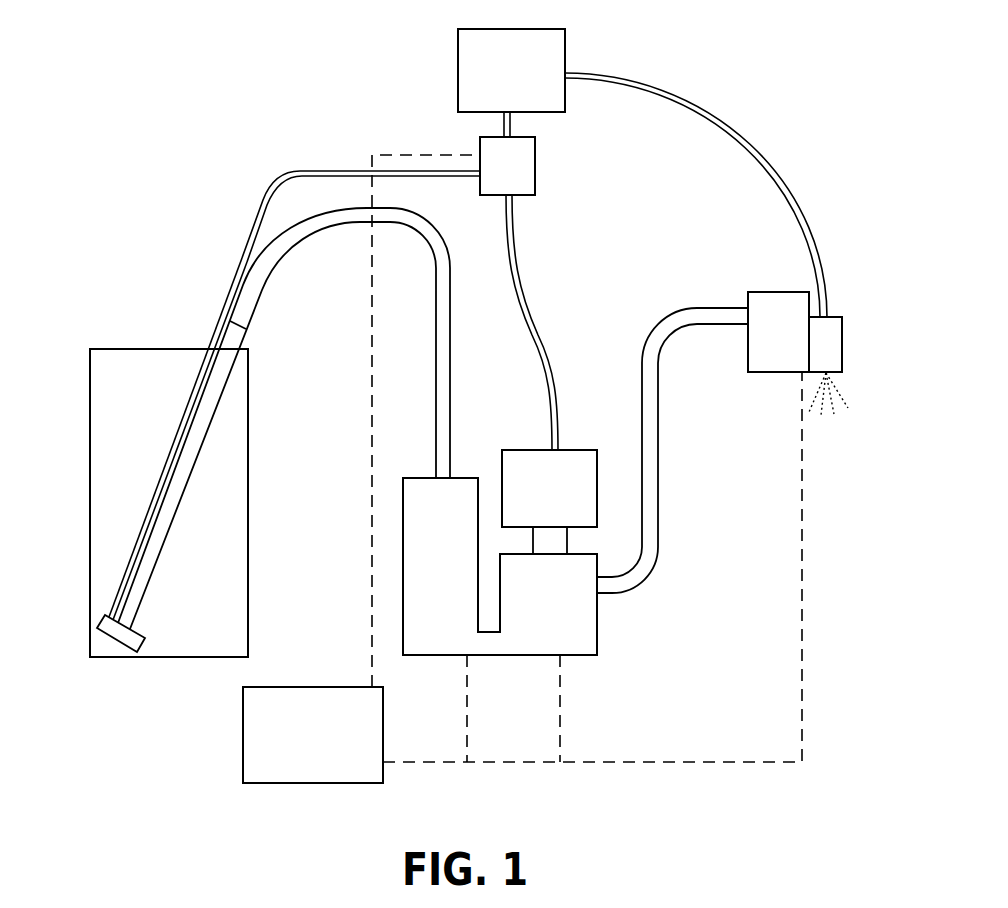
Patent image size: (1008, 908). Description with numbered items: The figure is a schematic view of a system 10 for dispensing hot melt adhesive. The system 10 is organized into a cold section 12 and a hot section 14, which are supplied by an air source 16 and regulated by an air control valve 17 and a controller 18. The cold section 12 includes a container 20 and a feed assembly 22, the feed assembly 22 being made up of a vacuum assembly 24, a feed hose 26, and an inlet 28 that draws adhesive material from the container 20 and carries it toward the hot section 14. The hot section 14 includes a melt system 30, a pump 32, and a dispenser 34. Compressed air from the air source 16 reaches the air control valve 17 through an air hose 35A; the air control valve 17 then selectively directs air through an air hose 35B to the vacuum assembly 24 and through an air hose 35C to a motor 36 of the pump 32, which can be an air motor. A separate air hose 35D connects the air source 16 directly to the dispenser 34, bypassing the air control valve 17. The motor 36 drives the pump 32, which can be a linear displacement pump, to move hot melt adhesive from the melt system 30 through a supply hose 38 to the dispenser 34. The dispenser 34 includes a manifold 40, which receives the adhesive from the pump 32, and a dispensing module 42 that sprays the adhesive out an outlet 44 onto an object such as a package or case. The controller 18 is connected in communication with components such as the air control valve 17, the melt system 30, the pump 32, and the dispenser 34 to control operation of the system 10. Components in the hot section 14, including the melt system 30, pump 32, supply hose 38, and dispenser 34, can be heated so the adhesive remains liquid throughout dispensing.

The system 10 is at (122, 131).
The cold section 12 is at (140, 287).
The hot section 14 is at (584, 315).
The air source 16 is at (458, 75).
The air control valve 17 is at (480, 145).
The controller 18 is at (338, 687).
The container 20 is at (97, 349).
The feed assembly 22 is at (259, 244).
The vacuum assembly 24 is at (160, 654).
The feed hose 26 is at (343, 225).
The inlet 28 is at (112, 648).
The melt system 30 is at (430, 657).
The pump 32 is at (584, 669).
The dispenser 34 is at (774, 277).
The air hose 35A is at (512, 120).
The air hose 35B is at (340, 170).
The air hose 35C is at (517, 270).
The air hose 35D is at (660, 88).
The motor 36 is at (535, 450).
The supply hose 38 is at (660, 460).
The manifold 40 is at (763, 372).
The dispensing module 42 is at (853, 331).
The outlet 44 is at (838, 372).